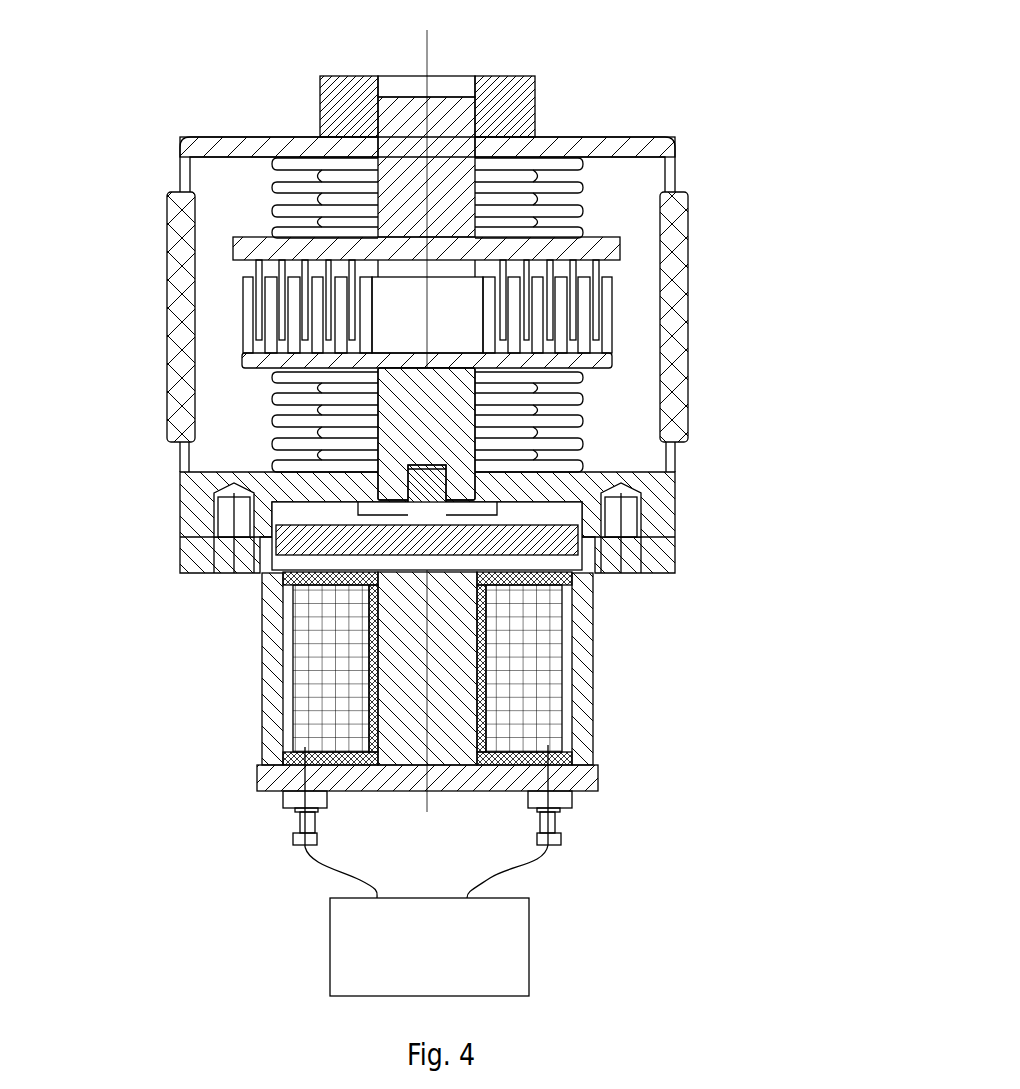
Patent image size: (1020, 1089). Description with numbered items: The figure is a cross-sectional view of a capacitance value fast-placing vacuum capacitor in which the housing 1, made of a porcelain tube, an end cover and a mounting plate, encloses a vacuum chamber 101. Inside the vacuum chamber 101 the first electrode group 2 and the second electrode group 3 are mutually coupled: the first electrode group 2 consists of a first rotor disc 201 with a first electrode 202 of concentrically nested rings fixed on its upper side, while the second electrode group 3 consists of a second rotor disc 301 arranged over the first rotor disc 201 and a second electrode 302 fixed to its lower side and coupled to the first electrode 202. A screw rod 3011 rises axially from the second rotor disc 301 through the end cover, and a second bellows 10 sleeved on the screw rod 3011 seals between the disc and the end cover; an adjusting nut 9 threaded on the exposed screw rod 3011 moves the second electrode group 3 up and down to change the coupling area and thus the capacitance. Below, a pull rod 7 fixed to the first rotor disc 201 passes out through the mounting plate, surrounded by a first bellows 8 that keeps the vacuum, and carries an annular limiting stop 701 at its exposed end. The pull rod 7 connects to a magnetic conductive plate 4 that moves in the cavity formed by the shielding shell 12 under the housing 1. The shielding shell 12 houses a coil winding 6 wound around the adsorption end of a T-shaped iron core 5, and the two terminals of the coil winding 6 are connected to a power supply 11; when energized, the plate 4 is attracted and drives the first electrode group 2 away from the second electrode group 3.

The housing 1 is at (167, 355).
The vacuum chamber 101 is at (225, 300).
The second bellows 10 is at (270, 186).
The adjusting nut 9 is at (535, 107).
The screw rod 3011 is at (493, 107).
The second rotor disc 301 is at (620, 240).
The second electrode 302 is at (613, 297).
The second electrode group 3 is at (534, 274).
The first electrode 202 is at (603, 343).
The first rotor disc 201 is at (610, 363).
The first electrode group 2 is at (536, 341).
The first bellows 8 is at (272, 450).
The pull rod 7 is at (475, 447).
The annular limiting stop 701 is at (578, 584).
The magnetic conductive plate 4 is at (272, 548).
The coil winding 6 is at (318, 682).
The iron core 5 is at (456, 716).
The shielding shell 12 is at (262, 735).
The power supply 11 is at (529, 958).